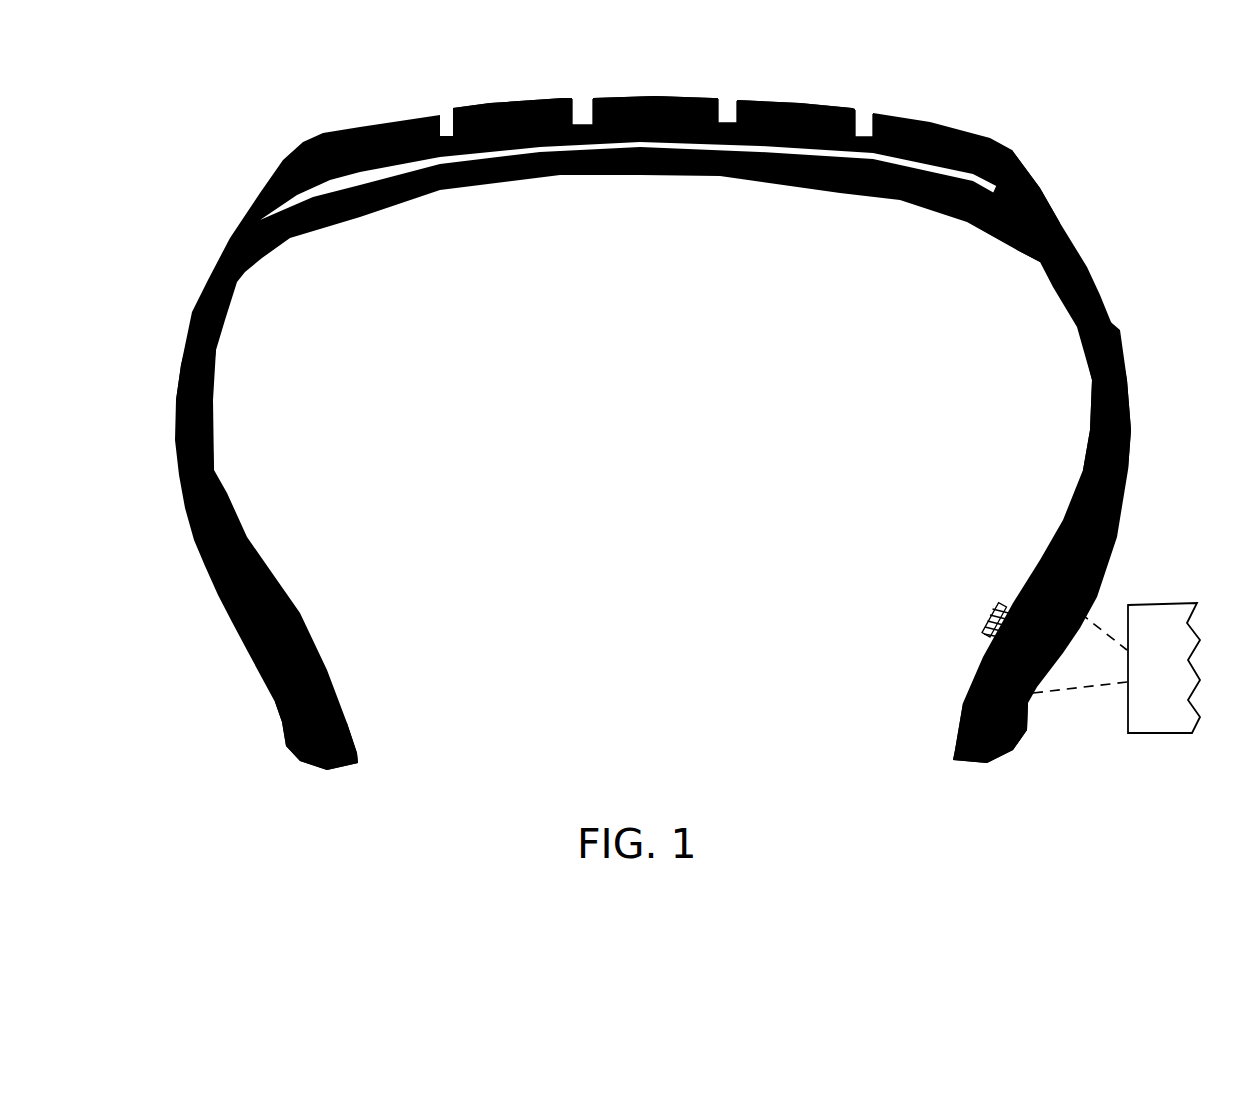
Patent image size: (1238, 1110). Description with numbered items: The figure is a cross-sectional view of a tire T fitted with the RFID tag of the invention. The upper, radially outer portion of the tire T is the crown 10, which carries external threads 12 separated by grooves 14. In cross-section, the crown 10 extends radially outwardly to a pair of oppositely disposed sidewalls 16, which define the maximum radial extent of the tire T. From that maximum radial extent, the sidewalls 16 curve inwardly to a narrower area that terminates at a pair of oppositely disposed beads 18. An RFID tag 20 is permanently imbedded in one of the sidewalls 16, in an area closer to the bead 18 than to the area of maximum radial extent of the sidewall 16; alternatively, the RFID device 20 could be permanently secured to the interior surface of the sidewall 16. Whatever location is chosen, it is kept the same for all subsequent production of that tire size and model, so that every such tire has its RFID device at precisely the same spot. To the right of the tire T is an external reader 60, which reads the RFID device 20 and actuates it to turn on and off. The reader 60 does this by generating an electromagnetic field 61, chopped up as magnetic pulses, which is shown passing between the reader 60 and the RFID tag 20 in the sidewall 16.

The crown 10 is at (658, 176).
The external threads 12 is at (505, 101).
The grooves 14 is at (578, 114).
The sidewalls 16 is at (220, 343).
The beads 18 is at (348, 723).
The RFID tag 20 is at (987, 620).
The external reader 60 is at (1163, 734).
The electromagnetic field 61 is at (1080, 692).
The tire T is at (1052, 195).